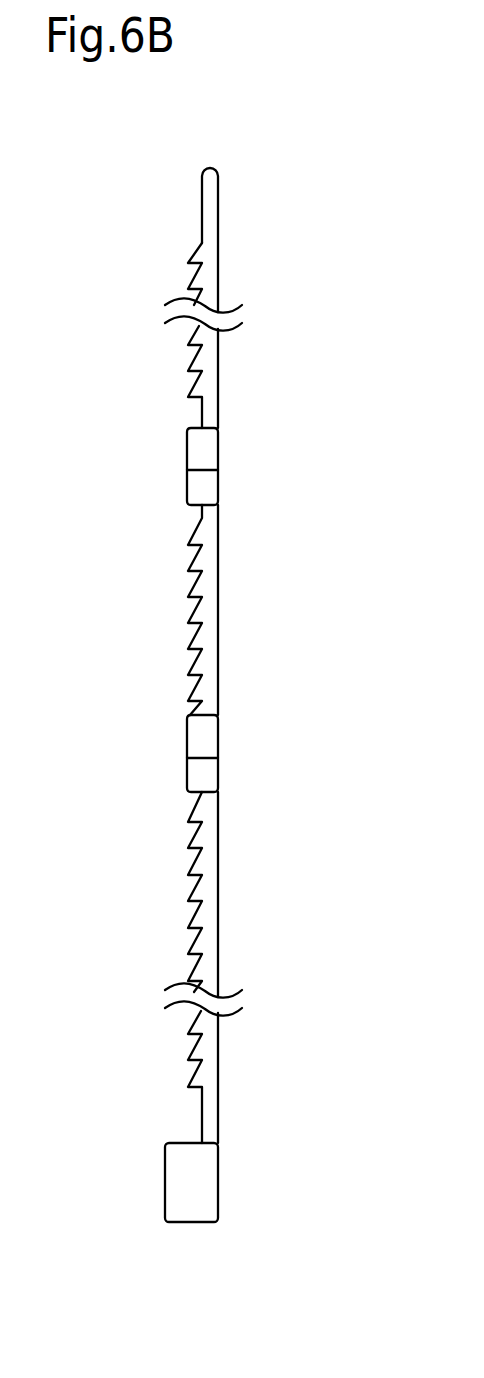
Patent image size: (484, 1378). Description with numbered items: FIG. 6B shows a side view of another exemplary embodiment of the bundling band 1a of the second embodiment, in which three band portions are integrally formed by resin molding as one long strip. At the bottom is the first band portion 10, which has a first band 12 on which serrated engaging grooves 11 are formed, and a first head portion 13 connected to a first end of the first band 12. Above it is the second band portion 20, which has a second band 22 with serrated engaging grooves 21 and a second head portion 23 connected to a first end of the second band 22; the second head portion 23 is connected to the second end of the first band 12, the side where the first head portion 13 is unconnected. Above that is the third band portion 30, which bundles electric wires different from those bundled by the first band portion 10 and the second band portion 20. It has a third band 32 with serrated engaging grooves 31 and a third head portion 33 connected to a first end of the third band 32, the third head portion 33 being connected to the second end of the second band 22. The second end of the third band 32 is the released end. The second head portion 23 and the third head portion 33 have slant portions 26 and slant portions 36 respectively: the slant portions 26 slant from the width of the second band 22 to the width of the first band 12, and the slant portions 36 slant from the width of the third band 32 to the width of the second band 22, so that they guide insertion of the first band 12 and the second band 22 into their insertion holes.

The bundling band 1a is at (122, 529).
The first band portion 10 is at (250, 793).
The engaging grooves 11 is at (192, 950).
The first band 12 is at (205, 920).
The first head portion 13 is at (198, 1193).
The second band portion 20 is at (250, 507).
The engaging grooves 21 is at (192, 652).
The second band 22 is at (208, 605).
The second head portion 23 is at (205, 770).
The slant portions 26 is at (200, 742).
The third band portion 30 is at (250, 162).
The engaging grooves 31 is at (193, 394).
The third band 32 is at (218, 400).
The third head portion 33 is at (205, 483).
The slant portions 36 is at (200, 455).